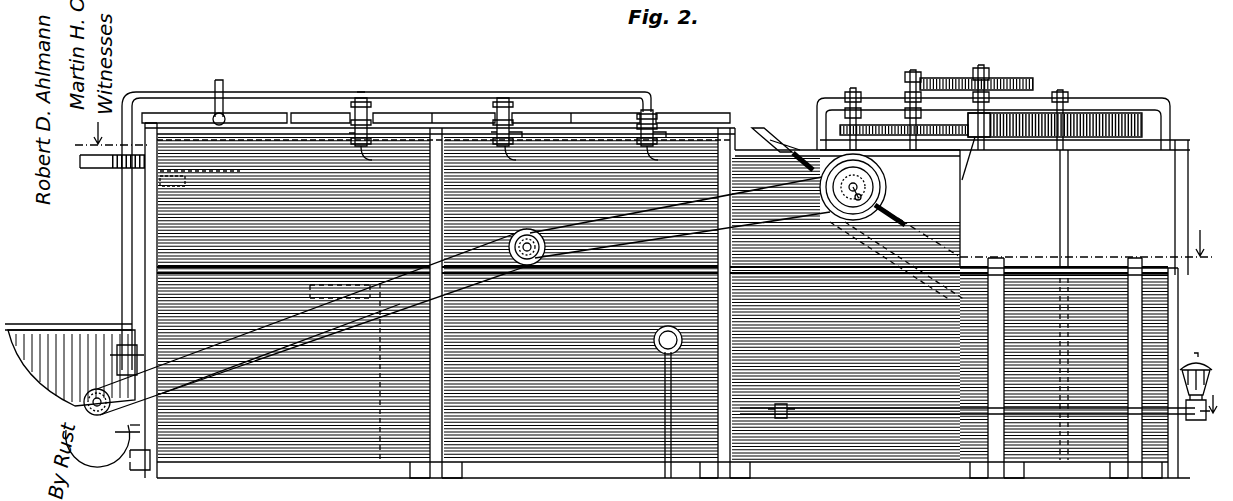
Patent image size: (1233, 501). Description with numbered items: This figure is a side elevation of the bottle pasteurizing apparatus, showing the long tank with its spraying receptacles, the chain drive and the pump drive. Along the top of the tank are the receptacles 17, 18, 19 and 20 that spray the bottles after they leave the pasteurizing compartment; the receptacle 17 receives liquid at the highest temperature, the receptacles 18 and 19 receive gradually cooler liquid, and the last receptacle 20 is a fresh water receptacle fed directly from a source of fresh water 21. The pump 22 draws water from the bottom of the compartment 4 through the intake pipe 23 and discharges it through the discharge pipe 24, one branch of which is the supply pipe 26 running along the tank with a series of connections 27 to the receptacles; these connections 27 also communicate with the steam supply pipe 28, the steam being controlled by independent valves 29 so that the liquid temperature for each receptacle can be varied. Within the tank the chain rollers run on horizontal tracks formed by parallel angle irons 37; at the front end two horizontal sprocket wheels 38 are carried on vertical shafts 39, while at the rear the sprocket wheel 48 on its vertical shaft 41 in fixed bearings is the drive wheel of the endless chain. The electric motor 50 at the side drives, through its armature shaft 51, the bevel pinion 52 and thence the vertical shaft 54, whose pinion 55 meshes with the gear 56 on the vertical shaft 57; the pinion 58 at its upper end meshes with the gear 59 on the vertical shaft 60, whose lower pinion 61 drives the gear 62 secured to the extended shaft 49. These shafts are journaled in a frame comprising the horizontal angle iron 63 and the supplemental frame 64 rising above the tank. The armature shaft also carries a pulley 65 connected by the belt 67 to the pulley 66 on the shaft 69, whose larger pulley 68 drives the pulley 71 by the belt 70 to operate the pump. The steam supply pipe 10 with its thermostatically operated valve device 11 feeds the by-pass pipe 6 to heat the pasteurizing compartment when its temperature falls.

The compartment 4 is at (652, 195).
The by-pass pipe 6 is at (1215, 412).
The steam supply pipe 10 is at (925, 406).
The thermostatically operated valve device 11 is at (1196, 424).
The receptacle 17 is at (598, 113).
The receptacle 18 is at (456, 113).
The receptacle 19 is at (313, 113).
The fresh water receptacle 20 is at (238, 113).
The source of fresh water 21 is at (222, 80).
The pump 22 is at (95, 432).
The intake pipe 23 is at (140, 470).
The discharge pipe 24 is at (162, 338).
The supply pipe 26 is at (120, 266).
The connections 27 is at (372, 113).
The steam supply pipe 28 is at (553, 148).
The valves 29 is at (368, 158).
The angle irons 37 is at (107, 170).
The sprocket wheels 38 is at (201, 183).
The vertical shafts 39 is at (186, 182).
The vertical shaft 41 is at (506, 402).
The sprocket wheel 48 is at (362, 304).
The extended shaft 49 is at (1070, 94).
The electric motor 50 is at (888, 186).
The armature shaft 51 is at (852, 200).
The bevel pinion 52 is at (898, 214).
The vertical shaft 54 is at (851, 92).
The pinion 55 is at (822, 128).
The gear 56 is at (884, 140).
The vertical shaft 57 is at (914, 70).
The pinion 58 is at (905, 86).
The gear 59 is at (1034, 82).
The vertical shaft 60 is at (985, 66).
The pinion 61 is at (962, 167).
The gear 62 is at (1112, 138).
The horizontal angle iron 63 is at (1178, 141).
The supplemental frame 64 is at (1160, 98).
The pulley 65 is at (860, 226).
The pulley 66 is at (509, 250).
The belt 67 is at (684, 207).
The larger pulley 68 is at (542, 228).
The shaft 69 is at (560, 250).
The belt 70 is at (282, 292).
The pulley 71 is at (71, 368).